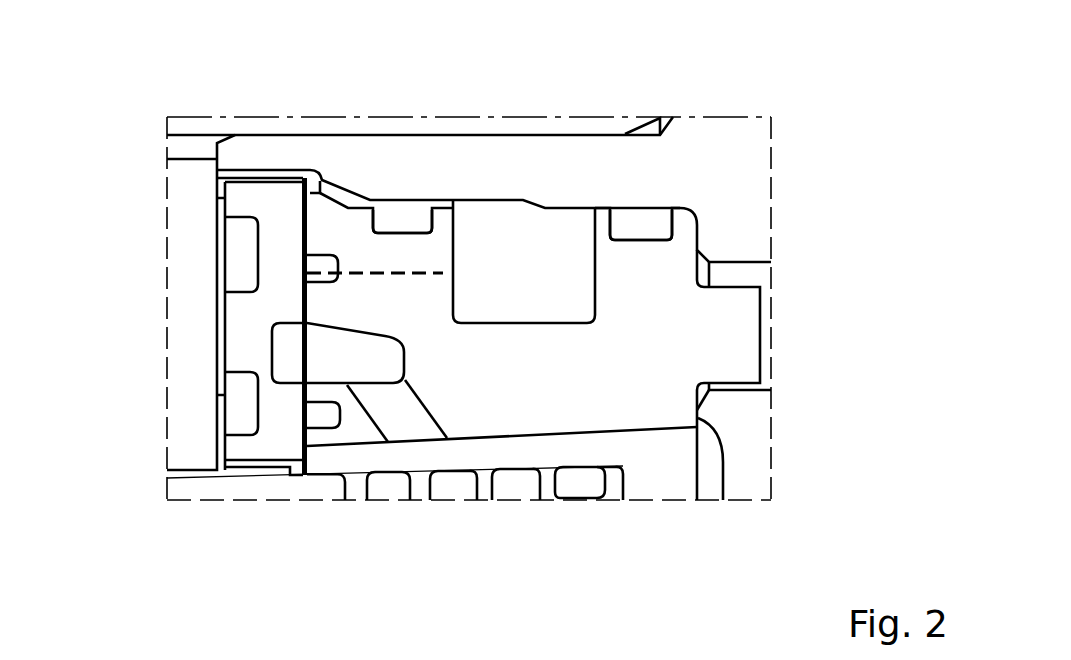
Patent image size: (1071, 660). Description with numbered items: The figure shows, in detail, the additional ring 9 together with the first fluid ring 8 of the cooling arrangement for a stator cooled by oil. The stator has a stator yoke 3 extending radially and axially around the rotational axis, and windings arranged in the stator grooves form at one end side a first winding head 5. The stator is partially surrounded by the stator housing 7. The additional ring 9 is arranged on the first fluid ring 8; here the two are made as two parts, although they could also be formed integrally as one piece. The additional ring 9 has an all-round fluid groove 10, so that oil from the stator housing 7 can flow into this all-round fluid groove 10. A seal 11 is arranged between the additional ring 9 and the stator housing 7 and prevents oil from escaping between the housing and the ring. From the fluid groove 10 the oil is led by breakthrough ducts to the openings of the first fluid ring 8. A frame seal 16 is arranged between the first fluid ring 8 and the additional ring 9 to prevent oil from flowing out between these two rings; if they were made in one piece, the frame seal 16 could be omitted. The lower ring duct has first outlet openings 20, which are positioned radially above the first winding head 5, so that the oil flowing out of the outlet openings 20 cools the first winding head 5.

The stator yoke 3 is at (190, 349).
The first winding head 5 is at (588, 482).
The stator housing 7 is at (730, 192).
The first fluid ring 8 is at (280, 294).
The additional ring 9 is at (668, 338).
The all-round fluid groove 10 is at (528, 257).
The seal 11 is at (403, 215).
The frame seal 16 is at (323, 268).
The first outlet openings 20 is at (382, 362).